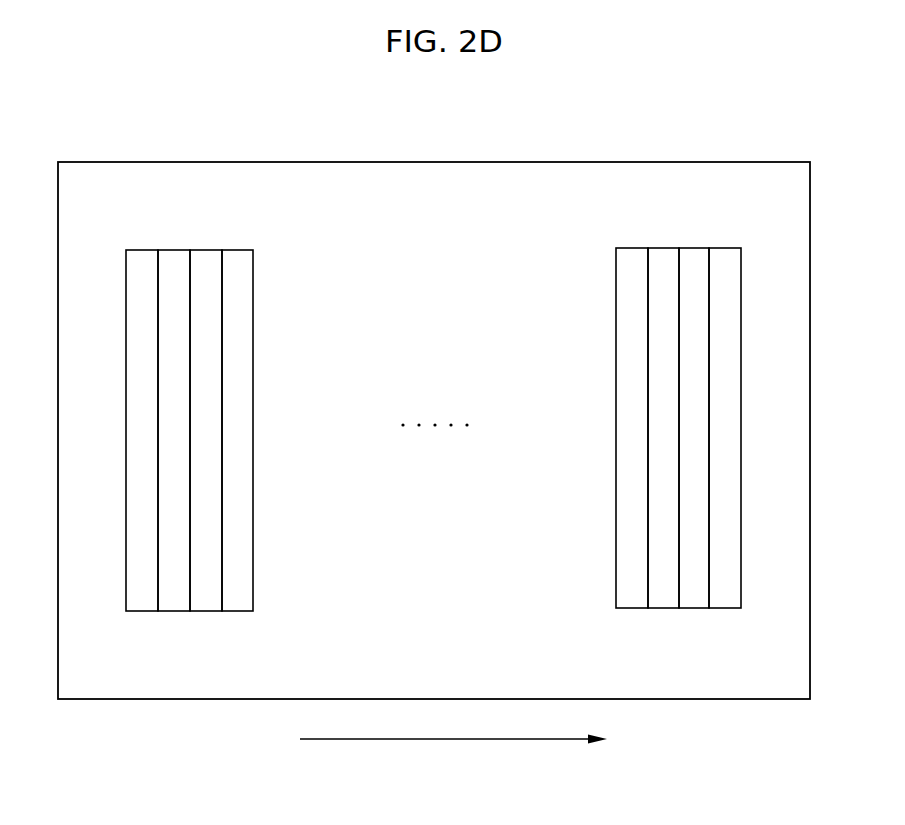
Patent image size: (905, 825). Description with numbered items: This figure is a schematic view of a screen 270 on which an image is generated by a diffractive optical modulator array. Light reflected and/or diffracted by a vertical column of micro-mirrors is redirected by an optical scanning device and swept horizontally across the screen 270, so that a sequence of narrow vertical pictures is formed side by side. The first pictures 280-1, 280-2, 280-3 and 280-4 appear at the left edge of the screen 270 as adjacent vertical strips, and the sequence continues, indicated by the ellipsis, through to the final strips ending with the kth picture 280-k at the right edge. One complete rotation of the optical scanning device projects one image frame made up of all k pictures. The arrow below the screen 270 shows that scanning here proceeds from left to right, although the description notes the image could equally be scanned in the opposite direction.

The screen 270 is at (435, 161).
The picture 280-1 is at (142, 611).
The picture 280-2 is at (177, 611).
The picture 280-3 is at (207, 250).
The picture 280-4 is at (236, 305).
The picture 280-k is at (730, 248).